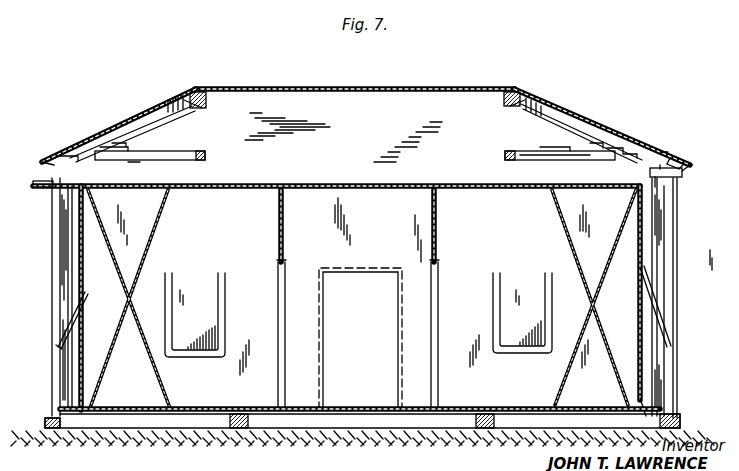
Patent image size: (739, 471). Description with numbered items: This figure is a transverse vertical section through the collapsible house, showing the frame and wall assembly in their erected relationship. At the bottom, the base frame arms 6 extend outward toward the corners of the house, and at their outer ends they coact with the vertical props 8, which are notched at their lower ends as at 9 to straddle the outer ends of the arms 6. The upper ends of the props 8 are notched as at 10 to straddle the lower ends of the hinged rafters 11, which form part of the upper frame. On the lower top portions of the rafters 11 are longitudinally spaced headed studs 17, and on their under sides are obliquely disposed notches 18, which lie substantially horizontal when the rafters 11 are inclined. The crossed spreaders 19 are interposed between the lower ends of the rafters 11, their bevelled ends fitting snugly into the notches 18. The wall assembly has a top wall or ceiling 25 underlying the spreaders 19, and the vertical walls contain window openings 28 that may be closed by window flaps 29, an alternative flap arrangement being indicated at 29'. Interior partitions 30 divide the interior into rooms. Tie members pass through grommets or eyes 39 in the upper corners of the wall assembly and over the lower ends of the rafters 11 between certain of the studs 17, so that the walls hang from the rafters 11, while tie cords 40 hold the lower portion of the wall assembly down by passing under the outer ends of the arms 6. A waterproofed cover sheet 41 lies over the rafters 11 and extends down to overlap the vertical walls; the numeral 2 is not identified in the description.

The cover sheet 41 is at (436, 88).
The headed studs 17 is at (649, 143).
The notches 18 is at (598, 141).
The grommets or eyes 39 is at (676, 158).
The hinged rafters 11 is at (206, 97).
The crossed spreaders 19 is at (202, 150).
The top wall or ceiling 25 is at (323, 183).
The upper notches 10 is at (655, 190).
The wall sheathing 2 is at (646, 255).
The vertical props 8 is at (672, 310).
The diagonal brace 29' is at (680, 306).
The window flaps 29 is at (412, 297).
The partitions 30 is at (278, 206).
The window openings 28 is at (222, 272).
The tie members or cords 40 is at (637, 428).
The lower notches 9 is at (640, 427).
The arms 6 is at (232, 434).